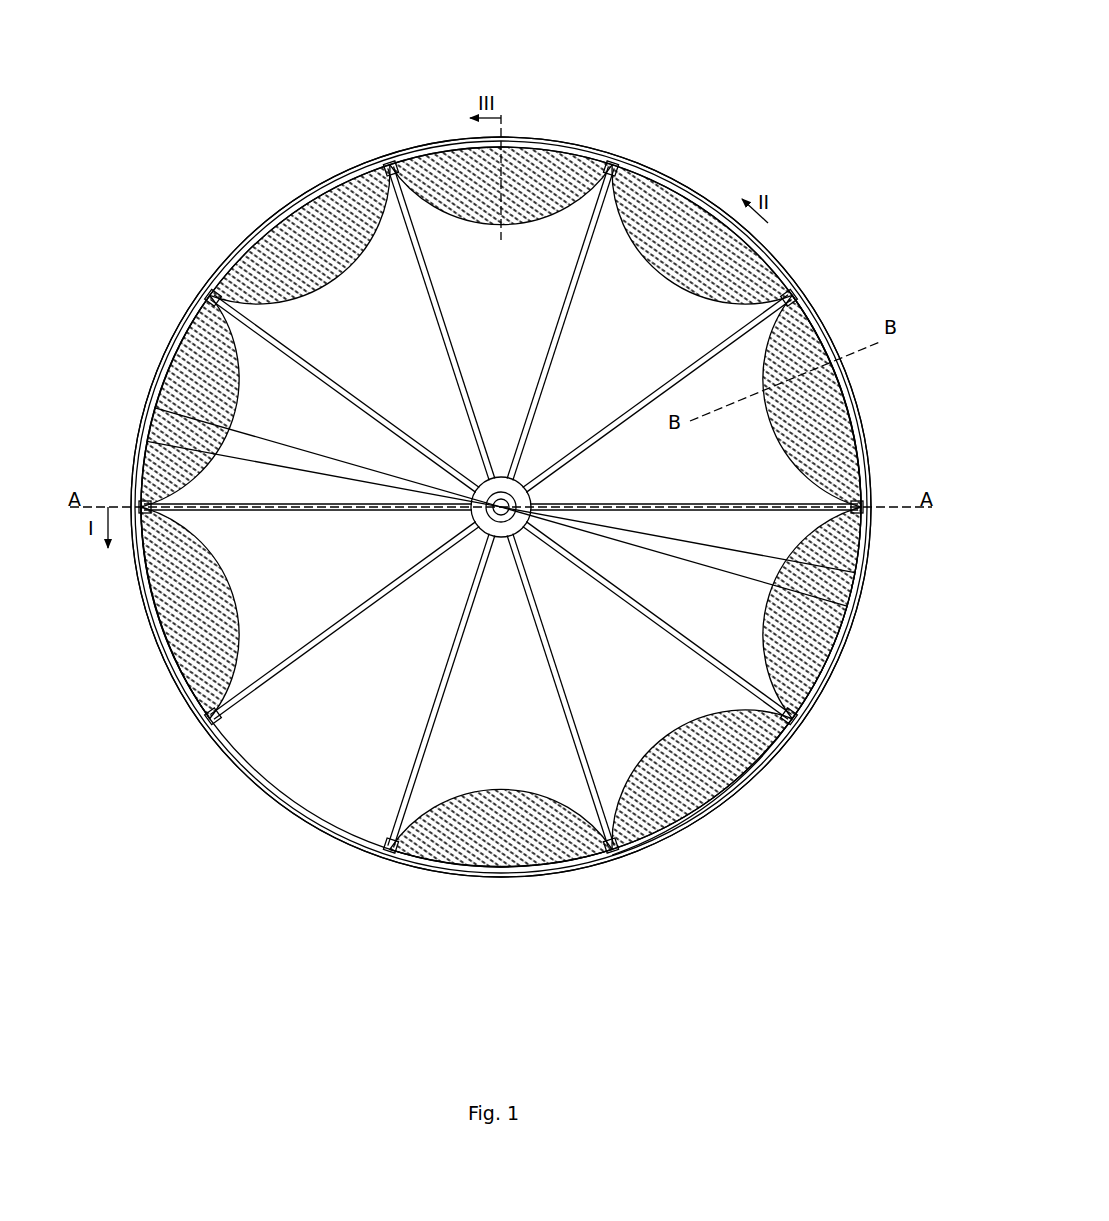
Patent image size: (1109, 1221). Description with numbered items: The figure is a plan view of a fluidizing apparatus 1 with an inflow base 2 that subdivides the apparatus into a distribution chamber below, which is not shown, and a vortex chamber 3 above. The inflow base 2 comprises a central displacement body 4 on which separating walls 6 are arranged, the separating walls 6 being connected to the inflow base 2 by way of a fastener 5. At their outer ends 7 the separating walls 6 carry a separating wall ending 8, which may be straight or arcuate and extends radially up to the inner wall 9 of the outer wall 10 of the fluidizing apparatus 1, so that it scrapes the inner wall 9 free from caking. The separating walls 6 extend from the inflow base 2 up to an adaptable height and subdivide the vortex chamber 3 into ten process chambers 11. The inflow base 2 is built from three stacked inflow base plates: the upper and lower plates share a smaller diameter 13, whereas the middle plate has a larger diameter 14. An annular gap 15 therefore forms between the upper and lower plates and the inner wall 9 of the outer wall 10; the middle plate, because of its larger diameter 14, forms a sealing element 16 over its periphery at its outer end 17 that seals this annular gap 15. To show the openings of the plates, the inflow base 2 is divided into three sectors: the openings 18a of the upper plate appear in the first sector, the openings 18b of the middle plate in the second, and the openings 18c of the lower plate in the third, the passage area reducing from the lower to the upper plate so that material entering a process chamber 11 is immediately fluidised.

The fluidizing apparatus 1 is at (268, 58).
The inflow base 2 is at (305, 822).
The vortex chamber 3 is at (521, 745).
The displacement body 4 is at (745, 660).
The fastener 5 is at (398, 170).
The separating wall 6 is at (612, 185).
The outer end 7 is at (822, 318).
The separating wall ending 8 is at (797, 300).
The inner wall 9 is at (280, 232).
The outer wall 10 is at (384, 158).
The process chamber 11 is at (868, 428).
The diameter 13 is at (501, 507).
The diameter 14 is at (501, 506).
The annular gap 15 is at (780, 763).
The sealing element 16 is at (852, 630).
The outer end 17 is at (845, 650).
The openings 18a is at (173, 675).
The openings 18b is at (660, 175).
The openings 18c is at (223, 260).